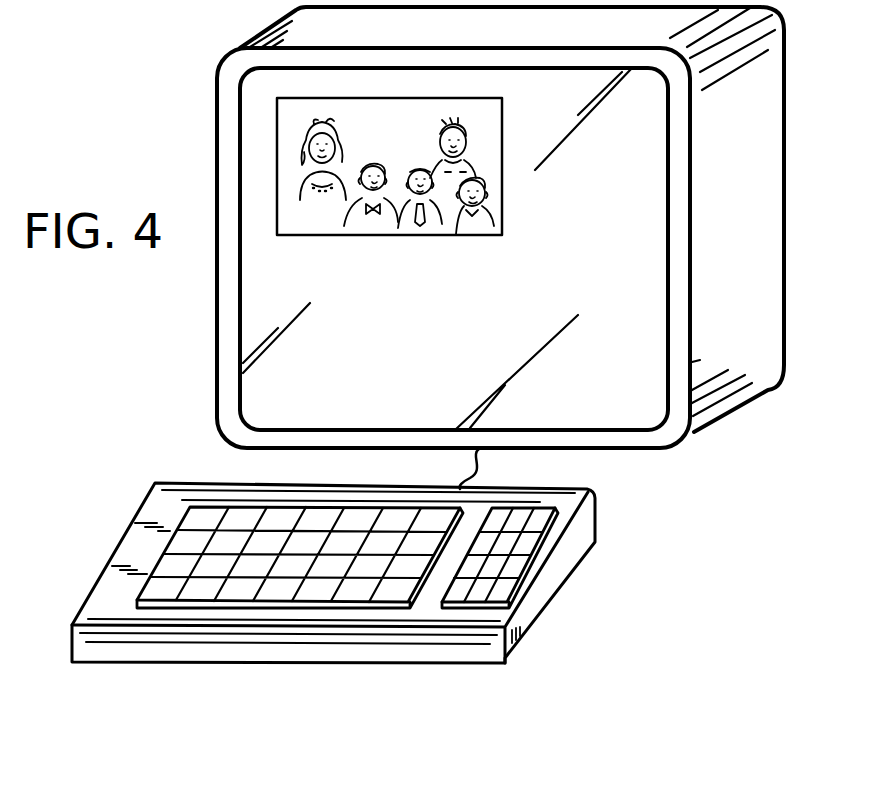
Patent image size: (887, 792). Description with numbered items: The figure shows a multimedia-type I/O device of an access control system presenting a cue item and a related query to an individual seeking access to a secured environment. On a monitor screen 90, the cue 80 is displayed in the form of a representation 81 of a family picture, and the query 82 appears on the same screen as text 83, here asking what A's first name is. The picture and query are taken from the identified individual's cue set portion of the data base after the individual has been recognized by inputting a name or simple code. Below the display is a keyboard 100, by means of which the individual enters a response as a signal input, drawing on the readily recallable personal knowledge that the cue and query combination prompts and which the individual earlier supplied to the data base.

The cue 80 is at (506, 191).
The representation 81 is at (467, 119).
The query 82 is at (484, 264).
The text 83 is at (551, 289).
The monitor screen 90 is at (466, 375).
The keyboard 100 is at (560, 567).